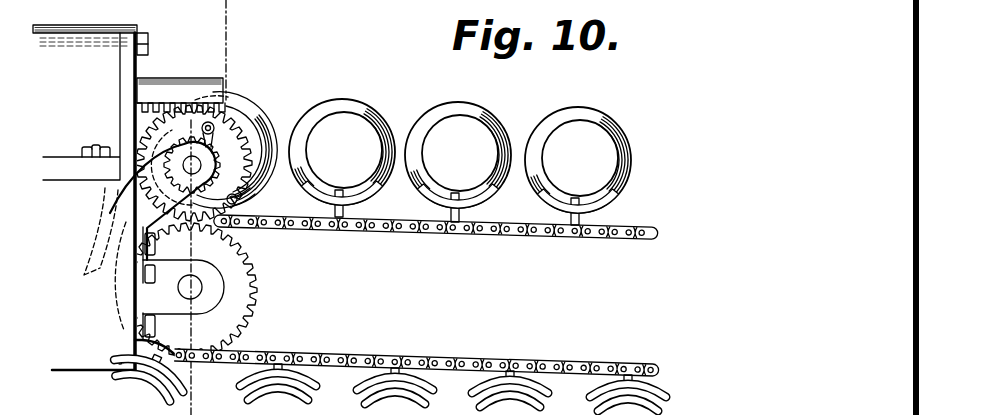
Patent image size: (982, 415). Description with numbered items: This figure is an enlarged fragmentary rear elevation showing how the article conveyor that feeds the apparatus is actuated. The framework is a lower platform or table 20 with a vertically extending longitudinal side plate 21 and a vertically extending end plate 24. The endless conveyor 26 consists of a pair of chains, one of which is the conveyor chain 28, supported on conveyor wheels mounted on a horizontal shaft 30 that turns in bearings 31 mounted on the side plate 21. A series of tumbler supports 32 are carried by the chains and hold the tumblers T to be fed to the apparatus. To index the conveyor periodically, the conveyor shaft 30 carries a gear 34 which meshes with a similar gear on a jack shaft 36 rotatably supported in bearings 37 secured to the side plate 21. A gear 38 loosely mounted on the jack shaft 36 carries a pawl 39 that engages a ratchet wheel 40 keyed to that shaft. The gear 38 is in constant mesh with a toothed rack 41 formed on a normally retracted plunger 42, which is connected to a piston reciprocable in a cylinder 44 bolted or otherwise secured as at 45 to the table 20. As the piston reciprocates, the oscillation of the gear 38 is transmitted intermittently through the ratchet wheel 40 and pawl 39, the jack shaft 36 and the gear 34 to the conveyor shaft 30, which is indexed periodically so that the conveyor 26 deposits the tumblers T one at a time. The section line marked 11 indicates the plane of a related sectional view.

The section line 11- 11 is at (200, 7).
The lower platform or table 20 is at (70, 182).
The longitudinal side plate 21 is at (137, 306).
The end plate 24 is at (67, 355).
The endless conveyor 26 is at (596, 241).
The conveyor chain 28 is at (397, 234).
The horizontal shaft 30 is at (202, 287).
The bearing 31 is at (205, 309).
The tumbler support 32 is at (186, 378).
The gear 34 is at (262, 266).
The jack shaft 36 is at (134, 187).
The bearing 37 is at (101, 218).
The gear 38 is at (215, 133).
The pawl 39 is at (213, 126).
The ratchet wheel 40 is at (195, 163).
The toothed rack 41 is at (152, 106).
The plunger 42 is at (147, 80).
The cylinder 44 is at (97, 24).
The securing means 45 is at (93, 148).
The tumbler T is at (433, 119).